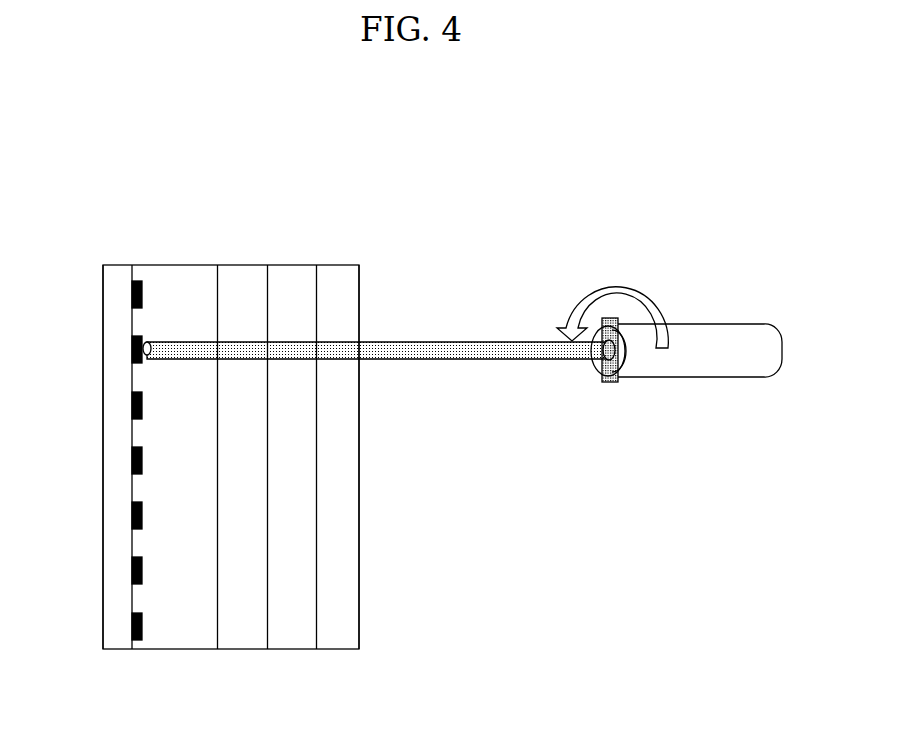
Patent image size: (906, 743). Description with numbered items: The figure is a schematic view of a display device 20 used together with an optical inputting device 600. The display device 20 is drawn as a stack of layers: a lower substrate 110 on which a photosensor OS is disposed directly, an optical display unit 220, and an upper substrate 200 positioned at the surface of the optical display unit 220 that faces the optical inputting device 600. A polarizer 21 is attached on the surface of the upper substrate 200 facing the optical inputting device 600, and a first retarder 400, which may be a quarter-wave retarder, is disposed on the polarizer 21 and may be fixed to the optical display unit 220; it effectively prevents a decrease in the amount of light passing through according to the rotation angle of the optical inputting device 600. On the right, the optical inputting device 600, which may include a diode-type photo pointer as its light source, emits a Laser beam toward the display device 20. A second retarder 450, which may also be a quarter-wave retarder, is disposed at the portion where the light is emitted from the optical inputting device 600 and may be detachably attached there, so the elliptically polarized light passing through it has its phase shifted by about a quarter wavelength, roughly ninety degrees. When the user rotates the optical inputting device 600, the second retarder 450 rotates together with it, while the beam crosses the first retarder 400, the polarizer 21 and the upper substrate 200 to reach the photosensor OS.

The display device 20 is at (361, 211).
The lower substrate 110 is at (115, 402).
The optical display unit 220 is at (175, 458).
The photosensor OS is at (143, 293).
The upper substrate 200 is at (240, 290).
The polarizer 21 is at (293, 290).
The first retarder 400 is at (342, 513).
The laser Laser is at (443, 360).
The second retarder 450 is at (610, 382).
The optical inputting device 600 is at (673, 380).